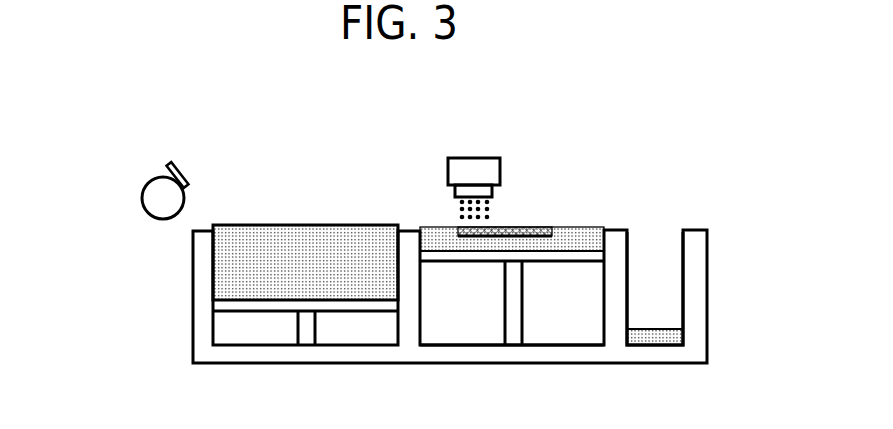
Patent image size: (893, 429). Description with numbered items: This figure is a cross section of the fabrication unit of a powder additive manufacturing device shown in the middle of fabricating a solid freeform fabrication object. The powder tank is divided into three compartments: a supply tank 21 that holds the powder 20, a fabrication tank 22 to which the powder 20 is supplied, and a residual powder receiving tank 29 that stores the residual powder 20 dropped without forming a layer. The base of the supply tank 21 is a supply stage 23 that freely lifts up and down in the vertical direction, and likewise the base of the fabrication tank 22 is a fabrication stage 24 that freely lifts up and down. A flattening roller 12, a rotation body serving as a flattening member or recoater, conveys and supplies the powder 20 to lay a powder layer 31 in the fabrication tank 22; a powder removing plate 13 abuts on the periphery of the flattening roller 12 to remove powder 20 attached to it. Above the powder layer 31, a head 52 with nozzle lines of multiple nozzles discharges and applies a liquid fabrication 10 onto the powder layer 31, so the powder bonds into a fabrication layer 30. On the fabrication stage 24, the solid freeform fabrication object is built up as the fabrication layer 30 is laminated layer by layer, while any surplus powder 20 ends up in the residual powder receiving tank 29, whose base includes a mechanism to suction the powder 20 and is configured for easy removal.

The liquid fabrication 10 is at (460, 206).
The flattening roller 12 is at (143, 197).
The powder removing plate 13 is at (178, 163).
The powder 20 is at (303, 237).
The supply tank 21 is at (200, 280).
The fabrication tank 22 is at (565, 357).
The supply stage 23 is at (355, 305).
The fabrication stage 24 is at (475, 257).
The residual powder receiving tank 29 is at (660, 357).
The fabrication layer 30 is at (518, 227).
The powder layer 31 is at (560, 229).
The head 52 is at (474, 187).